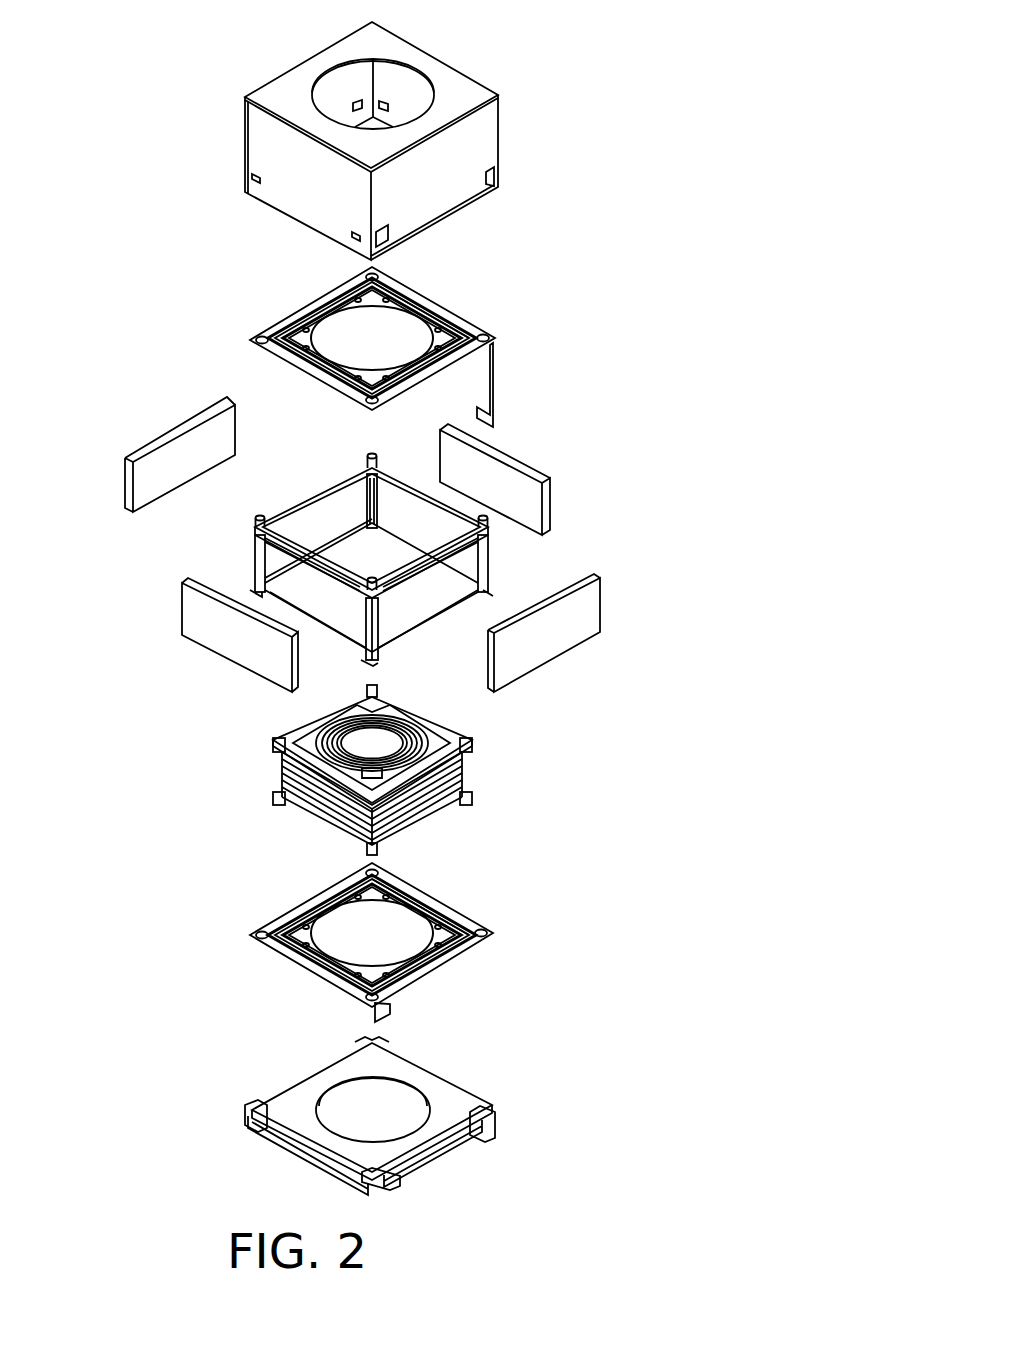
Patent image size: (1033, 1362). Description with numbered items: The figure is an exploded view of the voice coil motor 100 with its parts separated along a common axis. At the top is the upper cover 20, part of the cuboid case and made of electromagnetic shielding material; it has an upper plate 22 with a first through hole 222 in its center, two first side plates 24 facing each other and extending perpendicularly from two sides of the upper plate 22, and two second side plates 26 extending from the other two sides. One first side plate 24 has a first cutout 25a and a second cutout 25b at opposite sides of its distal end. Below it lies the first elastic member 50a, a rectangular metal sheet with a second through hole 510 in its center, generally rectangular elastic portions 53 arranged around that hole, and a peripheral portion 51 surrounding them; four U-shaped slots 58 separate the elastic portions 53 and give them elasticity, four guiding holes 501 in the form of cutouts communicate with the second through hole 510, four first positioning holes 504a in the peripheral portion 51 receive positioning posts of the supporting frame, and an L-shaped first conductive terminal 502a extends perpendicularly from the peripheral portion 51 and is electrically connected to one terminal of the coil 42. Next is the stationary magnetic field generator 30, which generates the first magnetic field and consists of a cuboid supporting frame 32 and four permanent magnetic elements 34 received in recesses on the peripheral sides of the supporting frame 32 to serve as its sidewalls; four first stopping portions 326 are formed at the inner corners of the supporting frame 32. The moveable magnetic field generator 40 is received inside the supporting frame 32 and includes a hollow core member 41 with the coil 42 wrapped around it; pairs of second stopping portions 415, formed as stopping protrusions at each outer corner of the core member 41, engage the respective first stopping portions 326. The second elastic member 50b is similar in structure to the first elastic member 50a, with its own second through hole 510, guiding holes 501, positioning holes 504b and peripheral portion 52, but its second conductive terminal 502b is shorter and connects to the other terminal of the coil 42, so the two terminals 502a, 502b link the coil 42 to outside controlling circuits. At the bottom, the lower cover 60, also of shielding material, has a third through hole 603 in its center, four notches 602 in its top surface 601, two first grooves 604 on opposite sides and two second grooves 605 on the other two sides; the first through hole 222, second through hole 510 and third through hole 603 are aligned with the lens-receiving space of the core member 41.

The voice coil motor 100 is at (668, 72).
The upper cover 20 is at (468, 52).
The upper plate 22 is at (282, 99).
The first through hole 222 is at (335, 95).
The first side plates 24 is at (468, 152).
The second side plates 26 is at (297, 197).
The first cutout 25a is at (488, 187).
The second cutout 25b is at (378, 240).
The first elastic member 50a is at (452, 297).
The second through hole 510 is at (330, 340).
The guiding holes 501 is at (440, 347).
The first positioning holes 504a is at (260, 340).
The peripheral portion 51 is at (292, 360).
The elastic portions 53 is at (315, 368).
The slots 58 is at (393, 393).
The first conductive terminal 502a is at (493, 393).
The stationary magnetic field generator 30 is at (637, 438).
The permanent magnetic elements 34 is at (527, 476).
The supporting frame 32 is at (505, 558).
The first stopping portions 326 is at (365, 463).
The moveable magnetic field generator 40 is at (475, 773).
The core member 41 is at (295, 735).
The second stopping portions 415 is at (273, 747).
The coil 42 is at (317, 803).
The second elastic member 50b is at (488, 915).
The corner hole of lower elastic member 504b is at (260, 935).
The frame of lower elastic member 52 is at (282, 948).
The second conductive terminal 502b is at (387, 1007).
The lower cover 60 is at (450, 1073).
The top surface 601 is at (447, 1112).
The third through hole 603 is at (350, 1117).
The second grooves 605 is at (282, 1145).
The first grooves 604 is at (438, 1152).
The notches 602 is at (376, 1183).